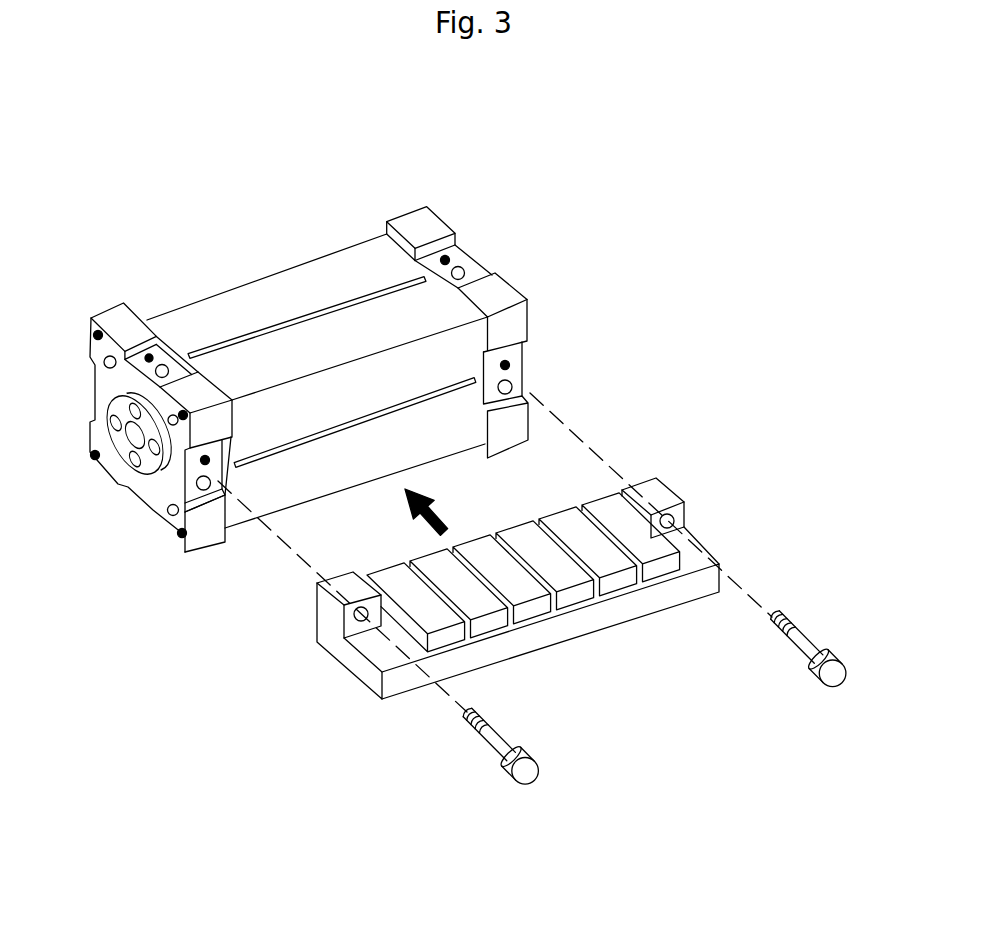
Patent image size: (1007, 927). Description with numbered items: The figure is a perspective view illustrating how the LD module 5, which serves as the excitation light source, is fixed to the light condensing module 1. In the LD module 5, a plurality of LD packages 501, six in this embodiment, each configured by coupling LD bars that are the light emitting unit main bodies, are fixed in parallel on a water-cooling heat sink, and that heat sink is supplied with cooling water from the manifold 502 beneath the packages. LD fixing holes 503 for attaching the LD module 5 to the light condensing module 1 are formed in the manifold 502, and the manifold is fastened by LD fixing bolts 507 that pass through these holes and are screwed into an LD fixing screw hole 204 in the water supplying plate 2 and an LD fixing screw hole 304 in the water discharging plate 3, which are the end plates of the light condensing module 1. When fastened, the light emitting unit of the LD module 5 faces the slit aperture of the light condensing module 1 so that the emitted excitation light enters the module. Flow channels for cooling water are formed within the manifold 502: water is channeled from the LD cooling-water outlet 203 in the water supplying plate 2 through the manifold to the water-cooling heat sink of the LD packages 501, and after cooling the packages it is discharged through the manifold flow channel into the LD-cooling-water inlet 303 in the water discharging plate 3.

The light condensing module 1 is at (283, 272).
The water supplying plate 2 is at (118, 305).
The water discharging plate 3 is at (433, 230).
The LD cooling-water outlet 203 is at (199, 488).
The LD fixing screw hole 204 is at (201, 464).
The LD-cooling-water inlet 303 is at (512, 387).
The LD fixing screw hole 304 is at (509, 365).
The LD module 5 is at (526, 588).
The LD package 501 is at (626, 488).
The manifold 502 is at (345, 657).
The LD fixing hole 503 is at (354, 623).
The LD fixing bolt 507 is at (498, 758).